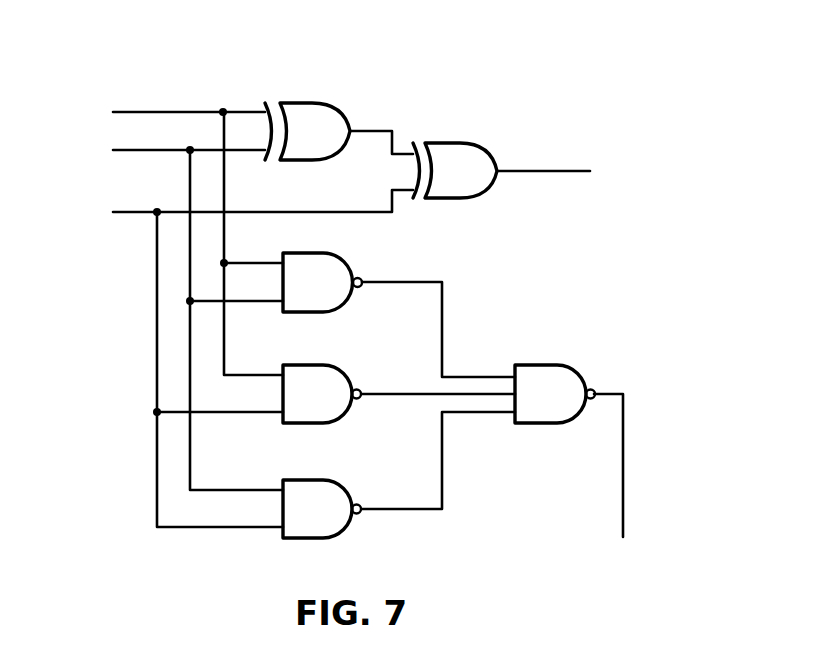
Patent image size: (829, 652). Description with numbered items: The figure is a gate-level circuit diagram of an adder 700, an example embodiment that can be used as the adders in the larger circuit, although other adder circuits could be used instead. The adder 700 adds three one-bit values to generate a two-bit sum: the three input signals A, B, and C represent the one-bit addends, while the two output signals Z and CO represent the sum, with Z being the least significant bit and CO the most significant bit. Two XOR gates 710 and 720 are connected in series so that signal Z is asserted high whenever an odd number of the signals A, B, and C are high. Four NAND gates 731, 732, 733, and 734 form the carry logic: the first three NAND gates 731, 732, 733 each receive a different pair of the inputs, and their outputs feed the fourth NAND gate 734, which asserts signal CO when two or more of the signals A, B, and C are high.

The adder 700 is at (154, 60).
The XOR gate 710 is at (341, 104).
The XOR gate 720 is at (457, 143).
The NAND gate 731 is at (352, 263).
The NAND gate 732 is at (350, 375).
The NAND gate 733 is at (349, 491).
The NAND gate 734 is at (578, 375).